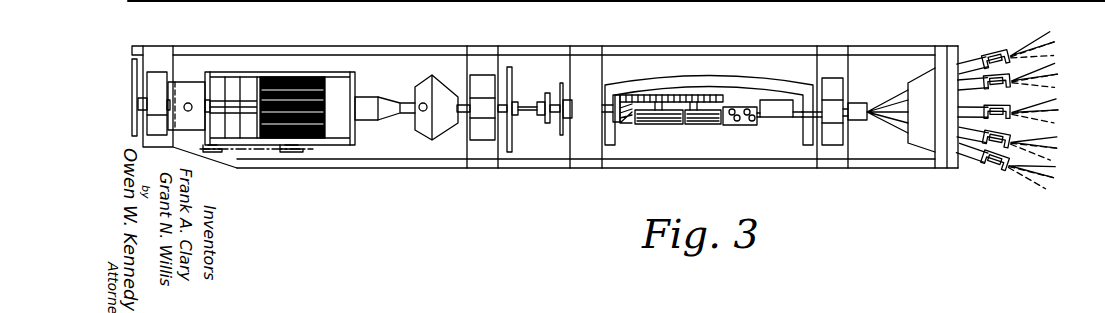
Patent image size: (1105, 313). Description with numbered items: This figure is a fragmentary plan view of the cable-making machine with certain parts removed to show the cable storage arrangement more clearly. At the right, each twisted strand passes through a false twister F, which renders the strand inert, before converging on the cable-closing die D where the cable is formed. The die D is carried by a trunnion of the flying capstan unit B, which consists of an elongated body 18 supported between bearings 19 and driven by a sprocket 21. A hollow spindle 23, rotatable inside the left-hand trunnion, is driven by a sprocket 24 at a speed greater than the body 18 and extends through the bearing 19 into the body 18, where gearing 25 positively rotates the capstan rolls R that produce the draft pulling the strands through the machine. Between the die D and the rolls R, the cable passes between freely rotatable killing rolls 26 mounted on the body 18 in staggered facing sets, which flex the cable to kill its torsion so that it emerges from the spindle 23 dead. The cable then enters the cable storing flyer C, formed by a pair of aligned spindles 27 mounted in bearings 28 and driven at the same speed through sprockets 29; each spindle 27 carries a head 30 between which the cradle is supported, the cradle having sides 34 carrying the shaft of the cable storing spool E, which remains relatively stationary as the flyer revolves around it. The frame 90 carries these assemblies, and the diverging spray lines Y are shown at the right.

The elongated body 18 is at (757, 83).
The bearings 19 is at (830, 100).
The driving sprocket 21 is at (562, 83).
The spindle 23 is at (553, 118).
The sprocket 24 is at (548, 93).
The gearing 25 is at (653, 97).
The killing rolls 26 is at (735, 125).
The spindles 27 is at (140, 102).
The bearings 28 is at (158, 97).
The sprockets 29 is at (140, 46).
The head 30 is at (190, 83).
The sides 34 is at (263, 74).
The frame 90 is at (703, 53).
The cable storing spool E is at (309, 79).
The cable flyer C is at (370, 145).
The flying capstan unit B is at (707, 108).
The capstan rolls R is at (693, 125).
The cable-closing die D is at (862, 105).
The false twister F is at (992, 63).
The spray Y is at (1062, 115).